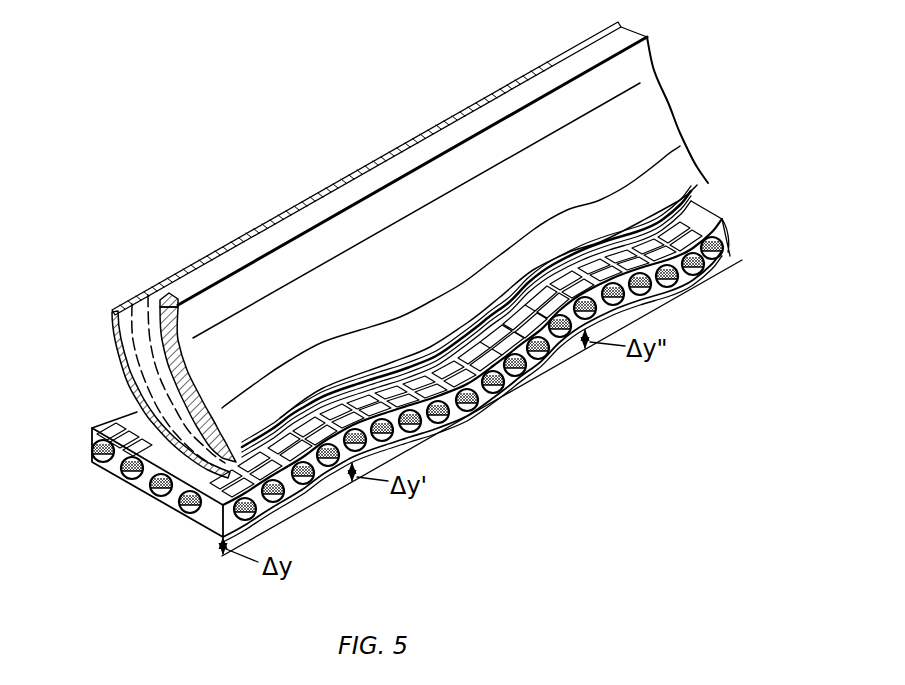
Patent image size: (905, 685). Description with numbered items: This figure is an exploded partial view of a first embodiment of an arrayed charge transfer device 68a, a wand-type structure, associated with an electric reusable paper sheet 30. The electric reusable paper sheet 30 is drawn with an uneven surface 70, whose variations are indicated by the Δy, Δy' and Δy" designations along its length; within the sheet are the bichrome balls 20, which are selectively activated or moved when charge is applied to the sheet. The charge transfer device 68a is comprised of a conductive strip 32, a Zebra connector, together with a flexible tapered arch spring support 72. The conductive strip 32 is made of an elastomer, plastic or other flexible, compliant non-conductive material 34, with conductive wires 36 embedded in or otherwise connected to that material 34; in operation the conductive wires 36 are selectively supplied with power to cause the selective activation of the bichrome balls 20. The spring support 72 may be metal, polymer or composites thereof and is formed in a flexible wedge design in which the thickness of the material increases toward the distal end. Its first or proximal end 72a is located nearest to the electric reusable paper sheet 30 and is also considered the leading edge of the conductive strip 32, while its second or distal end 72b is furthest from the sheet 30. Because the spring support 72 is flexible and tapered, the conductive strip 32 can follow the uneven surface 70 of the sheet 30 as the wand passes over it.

The bichrome balls 20 is at (508, 385).
The electric reusable paper sheet 30 is at (105, 399).
The conductive strip 32 is at (110, 301).
The non-conductive material 34 is at (143, 292).
The conductive wires 36 is at (118, 305).
The arrayed charge transfer device 68a is at (735, 87).
The uneven surface 70 is at (295, 506).
The spring support 72 is at (640, 143).
The proximal end 72a is at (709, 182).
The distal end 72b is at (633, 35).